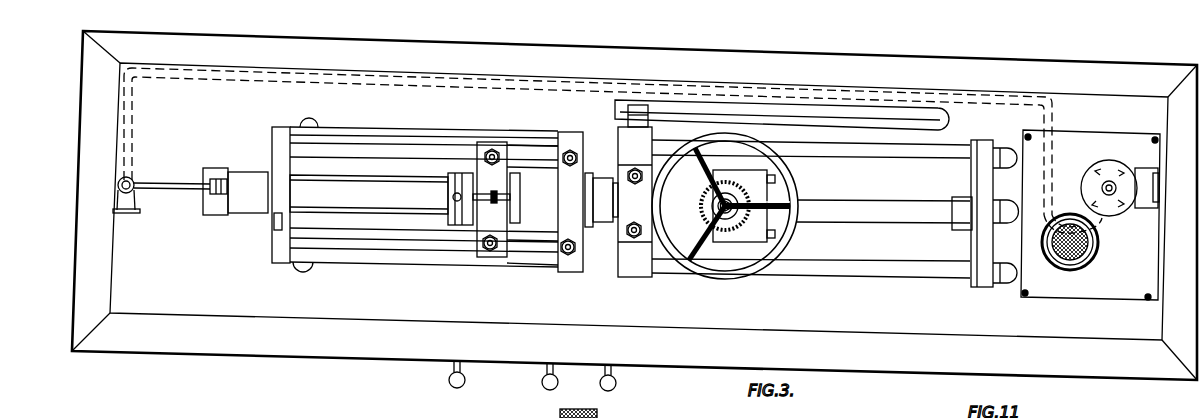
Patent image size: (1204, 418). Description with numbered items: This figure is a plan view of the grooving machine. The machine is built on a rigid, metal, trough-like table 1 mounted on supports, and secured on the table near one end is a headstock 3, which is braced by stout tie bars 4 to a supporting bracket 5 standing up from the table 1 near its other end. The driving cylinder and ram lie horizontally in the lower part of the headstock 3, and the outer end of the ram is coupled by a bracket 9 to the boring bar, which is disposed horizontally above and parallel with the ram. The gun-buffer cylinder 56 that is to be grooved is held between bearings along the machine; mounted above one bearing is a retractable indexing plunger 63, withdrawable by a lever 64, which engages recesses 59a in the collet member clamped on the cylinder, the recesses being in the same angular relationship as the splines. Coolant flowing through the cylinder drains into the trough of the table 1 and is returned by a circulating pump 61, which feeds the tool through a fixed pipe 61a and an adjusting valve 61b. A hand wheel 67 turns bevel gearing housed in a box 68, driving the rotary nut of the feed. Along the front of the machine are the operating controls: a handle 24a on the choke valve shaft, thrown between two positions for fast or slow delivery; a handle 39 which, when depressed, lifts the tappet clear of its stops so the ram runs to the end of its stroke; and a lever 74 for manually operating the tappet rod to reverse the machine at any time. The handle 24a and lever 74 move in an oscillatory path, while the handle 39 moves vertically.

The table 1 is at (942, 342).
The headstock 3 is at (325, 165).
The tie bars 4 is at (933, 158).
The supporting bracket 5 is at (983, 147).
The bracket 9 is at (767, 188).
The handle 24a is at (463, 380).
The handle 39 is at (556, 382).
The gun-buffer cylinder 56 is at (369, 194).
The recesses 59a is at (599, 409).
The circulating pump 61 is at (1088, 173).
The fixed pipe 61a is at (265, 80).
The adjusting valve 61b is at (133, 182).
The indexing plunger 63 is at (455, 196).
The lever 64 is at (493, 193).
The hand wheel 67 is at (791, 191).
The box 68 is at (752, 182).
The lever 74 is at (615, 383).